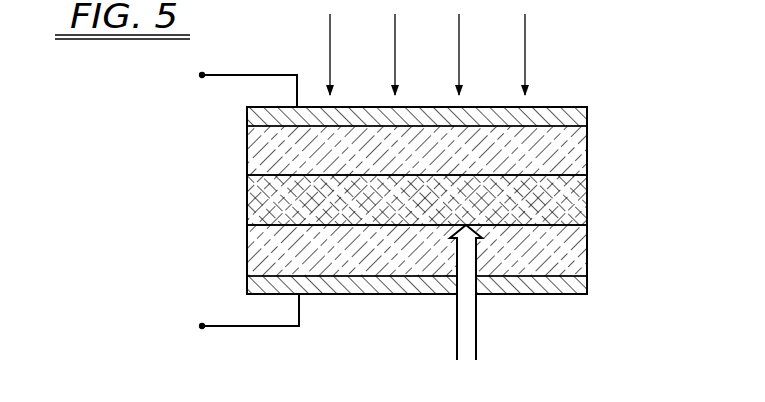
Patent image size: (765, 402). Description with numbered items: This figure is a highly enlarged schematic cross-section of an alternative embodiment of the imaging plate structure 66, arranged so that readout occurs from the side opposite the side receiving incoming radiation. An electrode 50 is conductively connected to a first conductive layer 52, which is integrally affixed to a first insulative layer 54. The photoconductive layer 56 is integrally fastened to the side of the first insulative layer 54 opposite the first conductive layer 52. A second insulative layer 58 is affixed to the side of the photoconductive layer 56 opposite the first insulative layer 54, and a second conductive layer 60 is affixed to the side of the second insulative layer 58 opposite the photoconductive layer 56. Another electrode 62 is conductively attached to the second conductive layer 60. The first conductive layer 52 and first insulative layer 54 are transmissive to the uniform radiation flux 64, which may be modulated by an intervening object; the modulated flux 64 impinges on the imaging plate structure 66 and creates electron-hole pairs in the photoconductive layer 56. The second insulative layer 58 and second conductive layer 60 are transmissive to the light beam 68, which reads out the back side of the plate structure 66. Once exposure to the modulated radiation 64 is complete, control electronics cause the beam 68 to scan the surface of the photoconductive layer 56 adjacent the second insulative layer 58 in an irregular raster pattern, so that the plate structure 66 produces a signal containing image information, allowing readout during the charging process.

The electrode 50 is at (225, 72).
The first conductive layer 52 is at (589, 116).
The first insulative layer 54 is at (583, 152).
The photoconductive layer 56 is at (575, 198).
The second insulative layer 58 is at (579, 248).
The second conductive layer 60 is at (585, 284).
The electrode 62 is at (218, 322).
The uniform radiation flux 64 is at (529, 46).
The imaging plate structure 66 is at (574, 90).
The light beam 68 is at (479, 331).